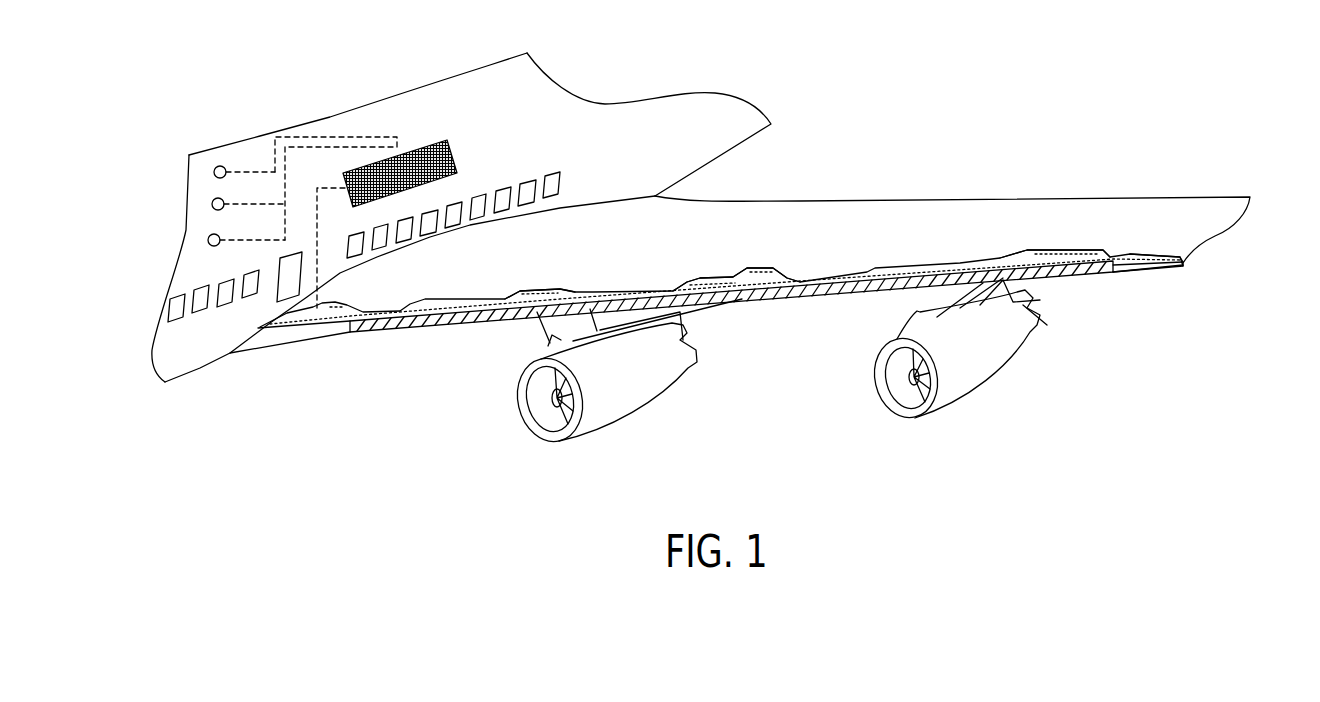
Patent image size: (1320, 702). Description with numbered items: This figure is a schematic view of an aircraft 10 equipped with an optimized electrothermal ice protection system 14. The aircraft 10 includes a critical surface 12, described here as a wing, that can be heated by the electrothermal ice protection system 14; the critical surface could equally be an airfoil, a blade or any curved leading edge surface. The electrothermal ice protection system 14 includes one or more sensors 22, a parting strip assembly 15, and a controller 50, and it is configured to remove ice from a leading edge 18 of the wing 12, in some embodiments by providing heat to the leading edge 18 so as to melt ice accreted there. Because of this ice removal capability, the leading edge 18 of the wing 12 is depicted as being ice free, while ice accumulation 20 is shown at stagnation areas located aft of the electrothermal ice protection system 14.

The aircraft 10 is at (998, 121).
The critical surface 12 is at (859, 216).
The electrothermal ice protection system 14 is at (340, 373).
The parting strip assembly 15 is at (455, 325).
The leading edge 18 is at (1158, 266).
The ice accumulation 20 is at (547, 295).
The sensors 22 is at (213, 170).
The controller 50 is at (450, 158).